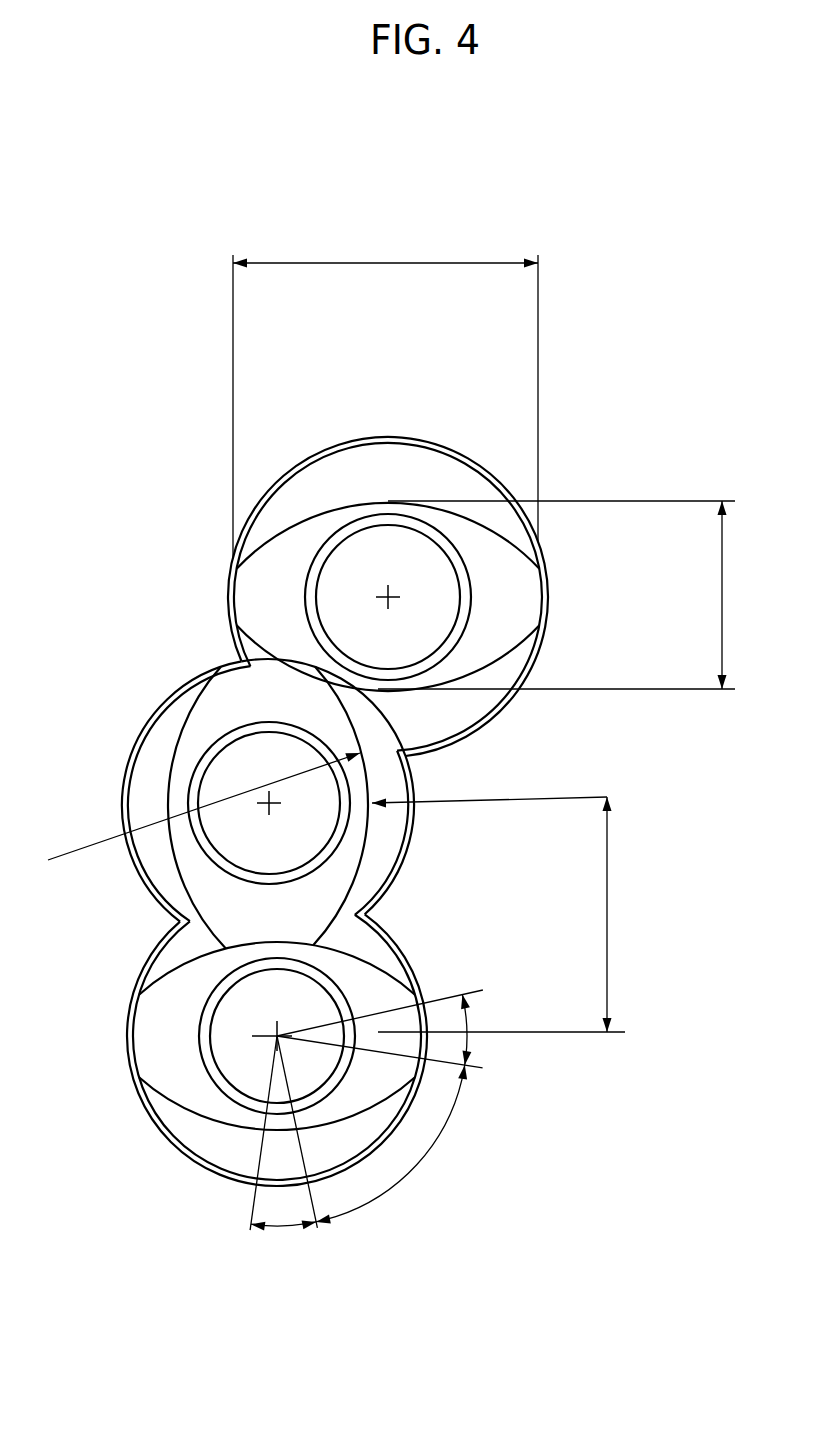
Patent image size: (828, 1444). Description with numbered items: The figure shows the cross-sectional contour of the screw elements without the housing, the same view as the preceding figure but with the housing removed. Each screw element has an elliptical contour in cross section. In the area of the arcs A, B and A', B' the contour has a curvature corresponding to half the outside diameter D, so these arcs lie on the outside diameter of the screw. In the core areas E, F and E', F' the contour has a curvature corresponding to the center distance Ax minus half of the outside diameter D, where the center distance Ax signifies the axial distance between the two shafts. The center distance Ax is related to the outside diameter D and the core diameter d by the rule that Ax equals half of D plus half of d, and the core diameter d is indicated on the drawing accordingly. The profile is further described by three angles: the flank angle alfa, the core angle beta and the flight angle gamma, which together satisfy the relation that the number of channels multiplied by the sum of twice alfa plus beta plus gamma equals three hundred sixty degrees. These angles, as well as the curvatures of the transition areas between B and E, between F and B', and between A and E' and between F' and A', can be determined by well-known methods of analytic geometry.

The arc A is at (242, 977).
The arc B is at (245, 1092).
The arc A' is at (396, 982).
The arc B' is at (403, 1085).
The area E is at (218, 1140).
The area F is at (358, 1169).
The area E' is at (161, 808).
The area F' is at (407, 806).
The outside diameter D is at (385, 385).
The core diameter d is at (567, 654).
The center distance of two screws Ax is at (355, 892).
The flight angle gamma is at (430, 1110).
The flank angle alfa is at (395, 1149).
The core angle beta is at (283, 1264).